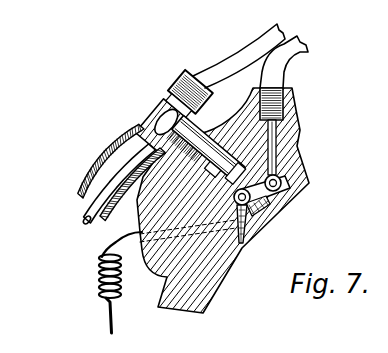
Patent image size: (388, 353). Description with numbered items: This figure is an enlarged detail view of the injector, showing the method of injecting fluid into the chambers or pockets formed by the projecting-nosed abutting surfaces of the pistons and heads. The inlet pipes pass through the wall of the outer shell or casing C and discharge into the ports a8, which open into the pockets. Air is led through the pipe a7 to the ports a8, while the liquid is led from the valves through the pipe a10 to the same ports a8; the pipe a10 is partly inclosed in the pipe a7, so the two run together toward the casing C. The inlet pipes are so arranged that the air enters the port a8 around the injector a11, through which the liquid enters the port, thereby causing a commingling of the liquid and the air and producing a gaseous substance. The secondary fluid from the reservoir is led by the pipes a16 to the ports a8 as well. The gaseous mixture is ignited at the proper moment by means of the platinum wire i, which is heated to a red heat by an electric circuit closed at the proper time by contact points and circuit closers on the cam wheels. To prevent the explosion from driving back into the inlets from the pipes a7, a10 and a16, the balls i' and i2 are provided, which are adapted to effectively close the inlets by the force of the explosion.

The outer shell or casing C is at (228, 287).
The pipe a7 is at (88, 186).
The pipe a10 is at (100, 142).
The injector a11 is at (186, 176).
The pipes a16 is at (283, 67).
The ports a8 is at (267, 207).
The platinum wire i is at (257, 218).
The ball i2 is at (292, 172).
The ball i' is at (249, 239).